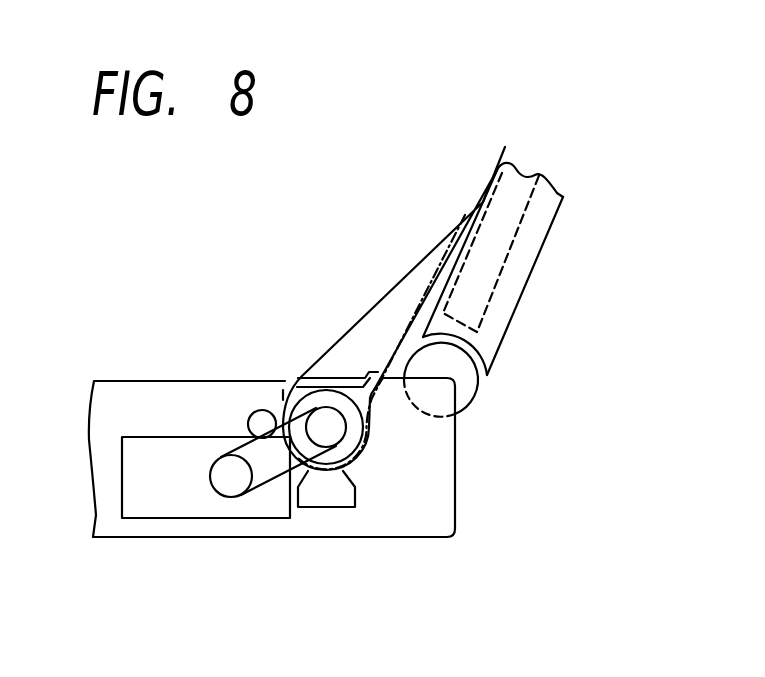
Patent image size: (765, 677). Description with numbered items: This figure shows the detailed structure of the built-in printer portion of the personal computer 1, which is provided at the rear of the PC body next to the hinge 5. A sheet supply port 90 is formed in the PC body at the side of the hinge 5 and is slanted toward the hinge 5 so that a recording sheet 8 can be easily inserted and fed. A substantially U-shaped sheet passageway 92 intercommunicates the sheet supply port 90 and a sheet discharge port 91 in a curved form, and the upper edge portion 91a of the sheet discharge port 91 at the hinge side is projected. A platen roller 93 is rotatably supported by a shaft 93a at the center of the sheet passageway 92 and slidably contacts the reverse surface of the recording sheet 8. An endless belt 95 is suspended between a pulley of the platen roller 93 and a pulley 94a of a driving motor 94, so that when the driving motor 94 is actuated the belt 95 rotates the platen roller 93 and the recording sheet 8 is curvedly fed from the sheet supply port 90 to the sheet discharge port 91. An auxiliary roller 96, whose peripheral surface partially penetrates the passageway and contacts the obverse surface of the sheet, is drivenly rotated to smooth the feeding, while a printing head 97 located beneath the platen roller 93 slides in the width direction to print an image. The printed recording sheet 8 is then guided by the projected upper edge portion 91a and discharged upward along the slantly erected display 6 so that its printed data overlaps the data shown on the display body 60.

The sheet feeding apparatus 1 is at (230, 260).
The hinge 5 is at (468, 380).
The display 6 is at (547, 242).
The recording sheet 8 is at (393, 288).
The display body 60 is at (527, 167).
The sheet supply port 90 is at (381, 370).
The sheet discharge port 91 is at (290, 383).
The upper edge portion 91a is at (283, 387).
The sheet passageway 92 is at (360, 455).
The platen roller 93 is at (345, 455).
The roller shaft 93a is at (333, 427).
The driving motor 94 is at (197, 520).
The motor pulley 94a is at (222, 478).
The endless belt 95 is at (273, 473).
The auxiliary roller 96 is at (251, 413).
The printing head 97 is at (332, 497).